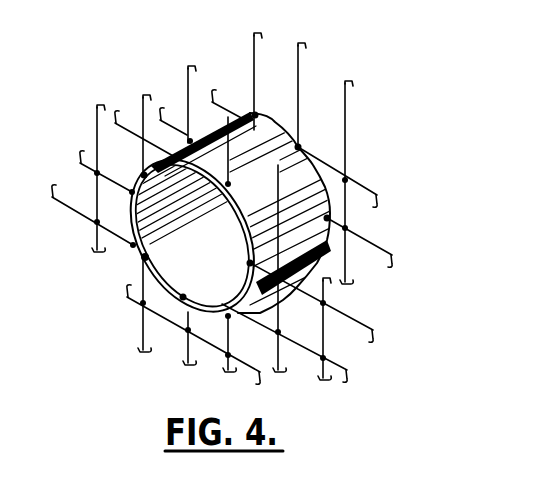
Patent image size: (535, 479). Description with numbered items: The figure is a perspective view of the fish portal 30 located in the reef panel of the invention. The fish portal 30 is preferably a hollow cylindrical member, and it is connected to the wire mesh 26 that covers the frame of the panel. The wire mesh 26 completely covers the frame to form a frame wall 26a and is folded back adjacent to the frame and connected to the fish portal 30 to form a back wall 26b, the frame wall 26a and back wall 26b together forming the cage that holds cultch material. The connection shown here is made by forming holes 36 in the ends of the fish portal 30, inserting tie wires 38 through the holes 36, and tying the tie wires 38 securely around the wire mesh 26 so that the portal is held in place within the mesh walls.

The wire mesh 26 is at (97, 137).
The frame wall 26a is at (308, 85).
The back wall 26b is at (196, 94).
The fish portal 30 is at (277, 189).
The holes 36 is at (256, 118).
The tie wires 38 is at (257, 113).